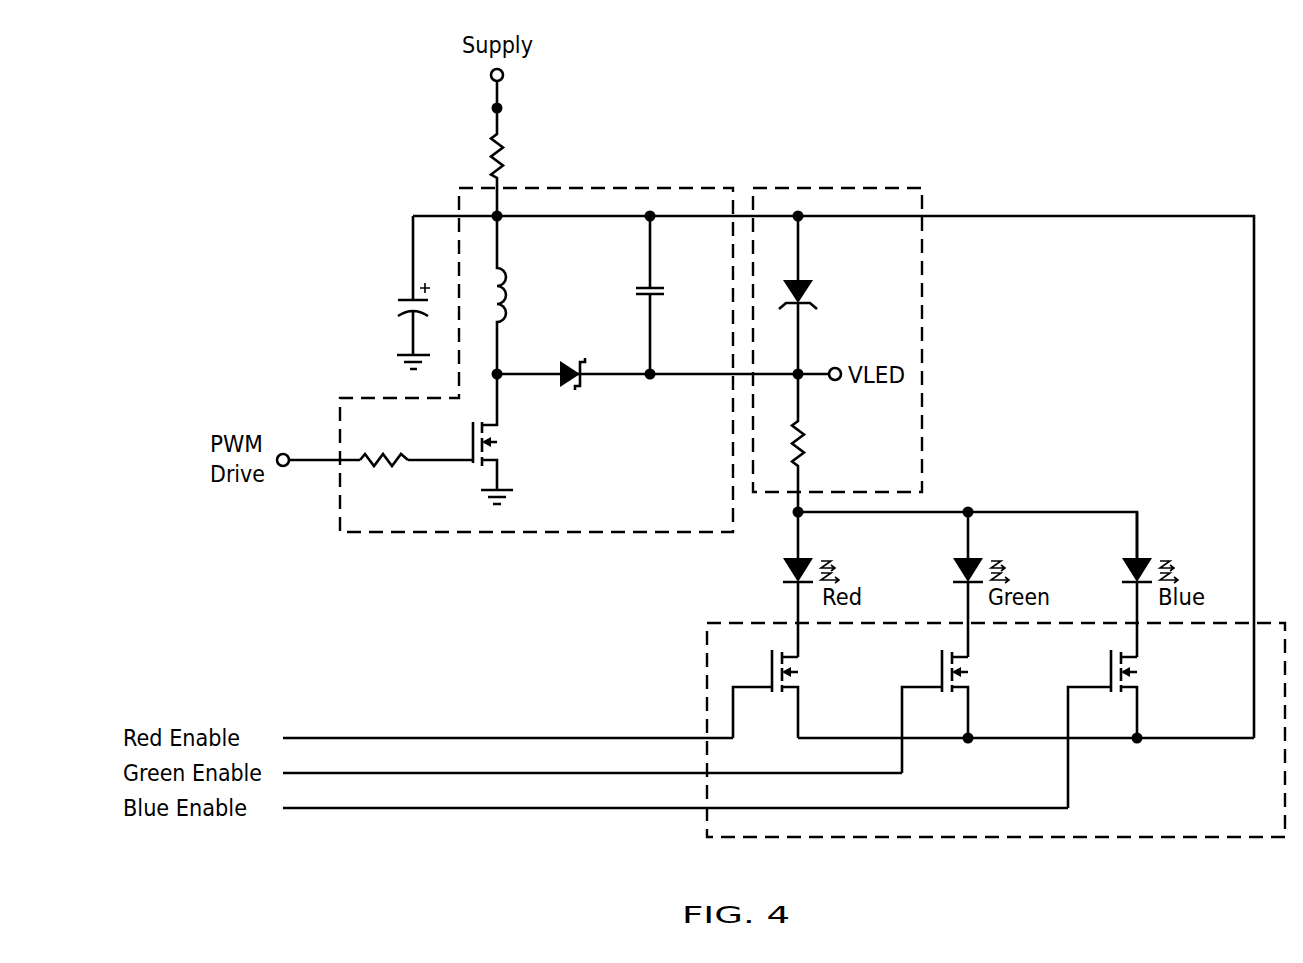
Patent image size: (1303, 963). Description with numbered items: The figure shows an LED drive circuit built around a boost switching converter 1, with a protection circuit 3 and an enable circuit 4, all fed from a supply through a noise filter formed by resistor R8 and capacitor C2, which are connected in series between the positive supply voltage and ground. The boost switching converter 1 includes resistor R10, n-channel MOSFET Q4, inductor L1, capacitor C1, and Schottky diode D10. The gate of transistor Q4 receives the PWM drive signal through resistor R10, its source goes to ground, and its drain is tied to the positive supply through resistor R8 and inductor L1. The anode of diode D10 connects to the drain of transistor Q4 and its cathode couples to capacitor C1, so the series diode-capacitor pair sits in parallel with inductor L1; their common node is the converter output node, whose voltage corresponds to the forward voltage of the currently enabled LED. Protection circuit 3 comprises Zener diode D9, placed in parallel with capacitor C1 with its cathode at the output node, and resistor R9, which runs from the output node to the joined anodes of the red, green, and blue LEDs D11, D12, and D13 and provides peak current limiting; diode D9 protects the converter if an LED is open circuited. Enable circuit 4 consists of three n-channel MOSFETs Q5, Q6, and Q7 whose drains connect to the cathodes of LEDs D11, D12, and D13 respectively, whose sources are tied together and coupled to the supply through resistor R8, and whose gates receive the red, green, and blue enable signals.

The switching converter 1 is at (640, 190).
The protection circuit 3 is at (842, 190).
The enable circuit 4 is at (1213, 838).
The resistor R8 is at (503, 163).
The capacitor C2 is at (407, 298).
The inductor L1 is at (510, 302).
The capacitor C1 is at (665, 293).
The Schottky diode D10 is at (563, 390).
The n-channel MOSFET Q4 is at (498, 446).
The resistor R10 is at (383, 470).
The Zener diode D9 is at (812, 292).
The resistor R9 is at (807, 452).
The red LED D11 is at (785, 572).
The green LED D12 is at (953, 568).
The blue LED D13 is at (1123, 568).
The n-channel MOSFET Q5 is at (800, 677).
The n-channel MOSFET Q6 is at (970, 677).
The n-channel MOSFET Q7 is at (1139, 677).